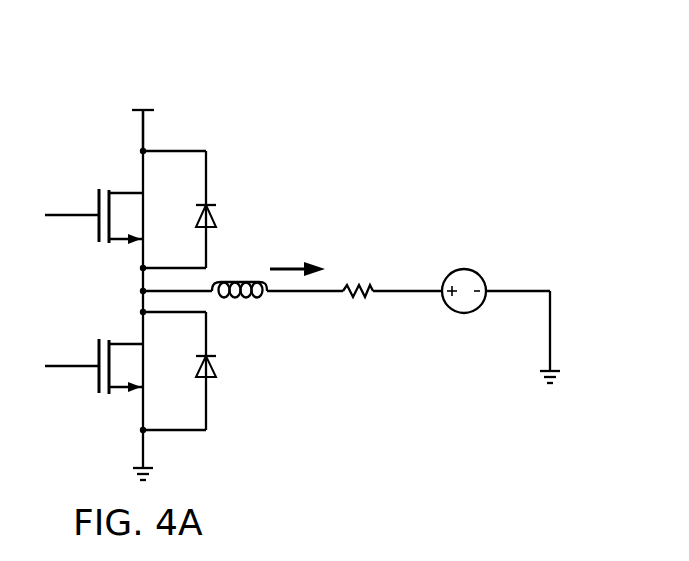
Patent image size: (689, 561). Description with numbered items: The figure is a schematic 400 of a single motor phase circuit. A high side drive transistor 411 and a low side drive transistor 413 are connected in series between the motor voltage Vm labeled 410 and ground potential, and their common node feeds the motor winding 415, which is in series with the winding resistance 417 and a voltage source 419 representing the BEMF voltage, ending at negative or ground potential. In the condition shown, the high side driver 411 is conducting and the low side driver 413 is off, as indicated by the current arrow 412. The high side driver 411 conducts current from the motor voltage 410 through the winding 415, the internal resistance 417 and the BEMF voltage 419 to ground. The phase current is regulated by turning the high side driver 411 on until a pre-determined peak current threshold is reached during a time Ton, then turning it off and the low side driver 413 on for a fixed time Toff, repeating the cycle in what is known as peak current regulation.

The schematic 400 is at (336, 63).
The motor voltage Vm 410 is at (131, 114).
The high side drive transistor 411 is at (96, 196).
The current arrow 412 is at (297, 262).
The low side drive transistor 413 is at (96, 383).
The motor winding 415 is at (244, 281).
The winding resistance 417 is at (359, 284).
The voltage source 419 is at (462, 270).